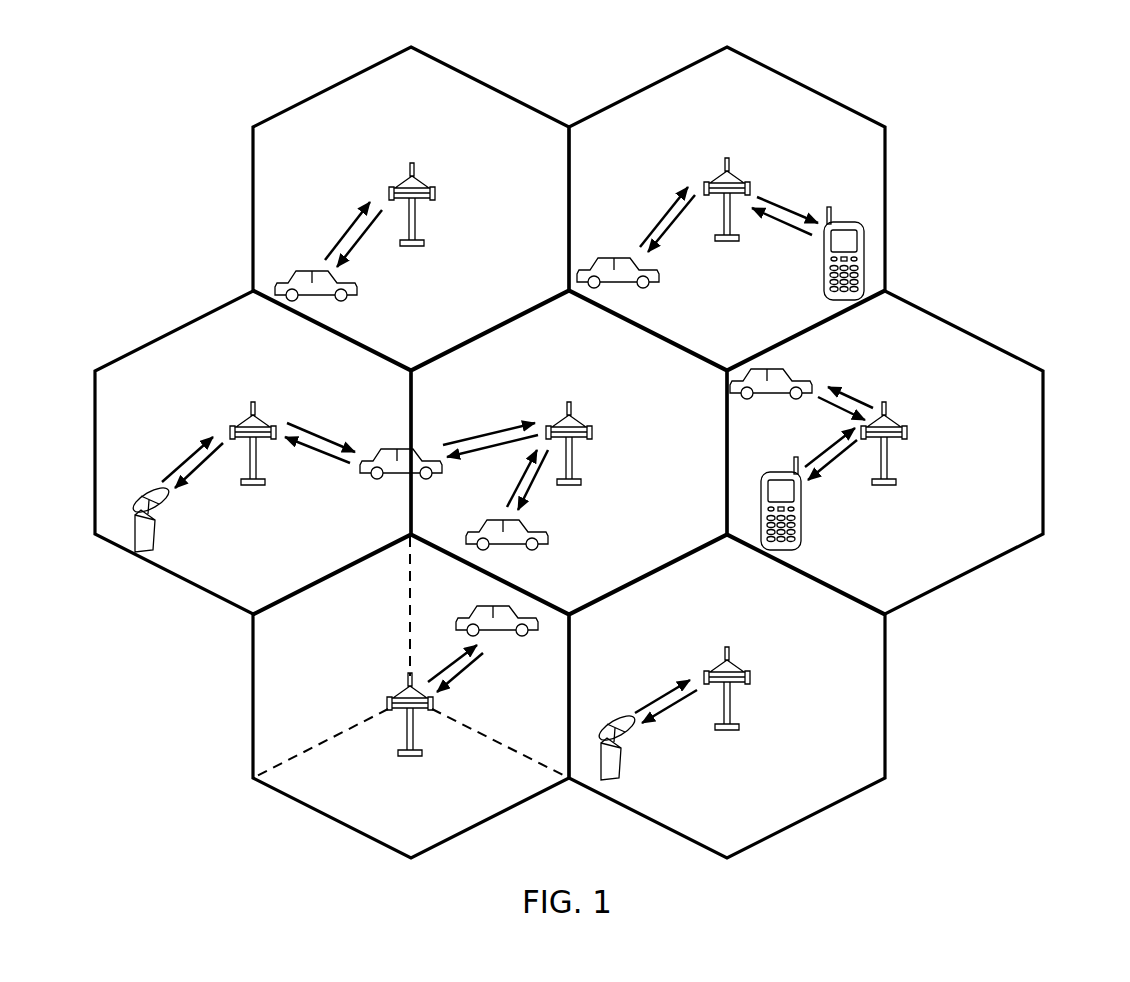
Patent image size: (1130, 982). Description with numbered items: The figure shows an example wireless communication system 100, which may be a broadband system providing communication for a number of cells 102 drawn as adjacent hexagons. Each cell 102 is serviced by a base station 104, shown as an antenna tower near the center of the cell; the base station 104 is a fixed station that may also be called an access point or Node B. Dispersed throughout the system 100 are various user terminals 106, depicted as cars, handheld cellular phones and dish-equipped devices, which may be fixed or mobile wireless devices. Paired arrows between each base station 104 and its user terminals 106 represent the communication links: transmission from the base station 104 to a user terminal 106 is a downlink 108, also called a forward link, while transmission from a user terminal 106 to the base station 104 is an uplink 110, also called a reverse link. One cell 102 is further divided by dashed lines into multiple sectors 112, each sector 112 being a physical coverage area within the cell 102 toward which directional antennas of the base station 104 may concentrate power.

The wireless communication system 100 is at (1030, 136).
The cell 102 is at (341, 80).
The base station 104 is at (412, 163).
The user terminal 106 is at (357, 294).
The downlink 108 is at (356, 247).
The uplink 110 is at (348, 226).
The sector 112 is at (467, 813).